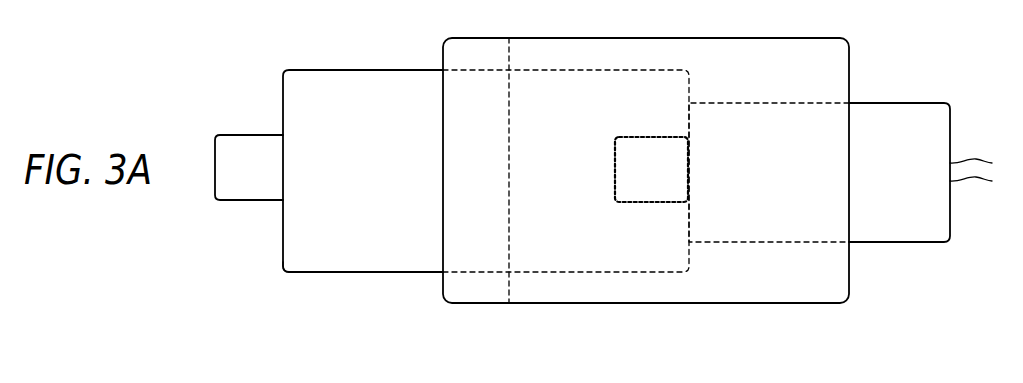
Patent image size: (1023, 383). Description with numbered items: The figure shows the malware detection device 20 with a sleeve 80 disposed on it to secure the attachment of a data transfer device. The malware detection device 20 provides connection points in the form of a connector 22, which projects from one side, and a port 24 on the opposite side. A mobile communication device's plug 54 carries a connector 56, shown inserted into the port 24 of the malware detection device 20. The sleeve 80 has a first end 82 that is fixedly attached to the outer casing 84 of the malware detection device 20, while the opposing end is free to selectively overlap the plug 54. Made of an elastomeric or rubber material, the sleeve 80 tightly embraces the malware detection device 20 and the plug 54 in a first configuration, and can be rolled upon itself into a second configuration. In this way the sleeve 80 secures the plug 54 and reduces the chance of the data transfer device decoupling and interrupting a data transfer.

The malware detection device 20 is at (313, 69).
The connector 22 is at (253, 204).
The port 24 is at (618, 182).
The plug 54 is at (924, 102).
The connector 56 is at (672, 185).
The sleeve 80 is at (775, 291).
The first end 82 is at (477, 287).
The outer casing 84 is at (298, 256).